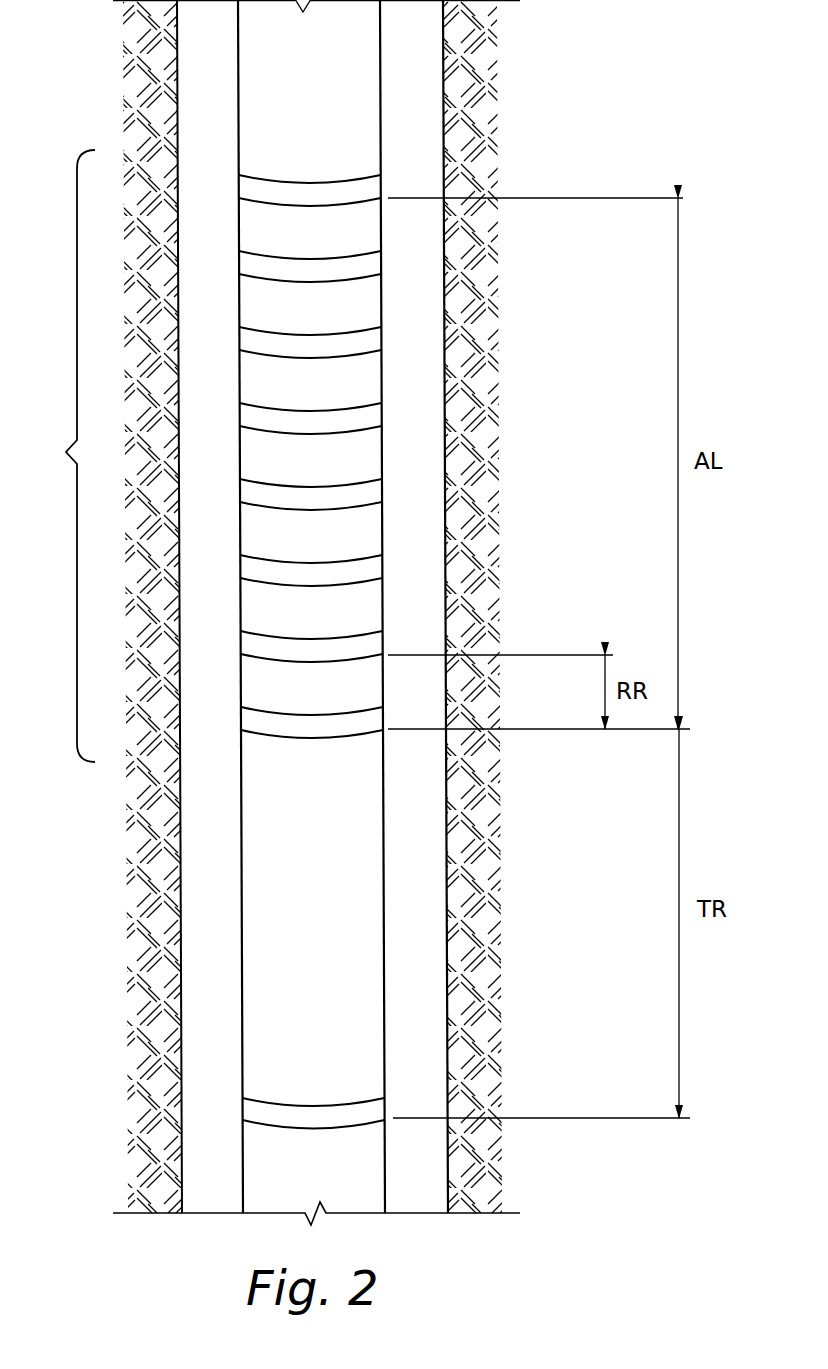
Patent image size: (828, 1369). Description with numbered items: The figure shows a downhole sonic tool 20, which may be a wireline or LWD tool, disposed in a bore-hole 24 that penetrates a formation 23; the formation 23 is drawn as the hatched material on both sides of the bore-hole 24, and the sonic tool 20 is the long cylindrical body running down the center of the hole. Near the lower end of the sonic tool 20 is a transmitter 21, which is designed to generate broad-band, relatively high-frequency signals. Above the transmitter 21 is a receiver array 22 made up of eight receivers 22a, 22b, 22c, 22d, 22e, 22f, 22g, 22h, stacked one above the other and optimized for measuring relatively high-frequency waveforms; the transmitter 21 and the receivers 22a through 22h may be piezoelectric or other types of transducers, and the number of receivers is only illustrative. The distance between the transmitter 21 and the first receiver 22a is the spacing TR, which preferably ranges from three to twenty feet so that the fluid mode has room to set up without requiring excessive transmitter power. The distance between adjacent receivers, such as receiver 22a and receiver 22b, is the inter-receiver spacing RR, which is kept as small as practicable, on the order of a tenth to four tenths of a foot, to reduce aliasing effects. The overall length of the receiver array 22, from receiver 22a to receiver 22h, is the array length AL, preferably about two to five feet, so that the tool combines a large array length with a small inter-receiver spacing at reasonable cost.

The sonic tool 20 is at (238, 931).
The transmitter 21 is at (308, 1117).
The receiver array 22 is at (61, 456).
The receiver 22a is at (300, 726).
The receiver 22b is at (300, 650).
The receiver 22c is at (300, 574).
The receiver 22d is at (300, 498).
The receiver 22e is at (300, 422).
The receiver 22f is at (300, 346).
The receiver 22g is at (300, 270).
The receiver 22h is at (300, 194).
The formation 23 is at (485, 74).
The borehole 24 is at (198, 80).